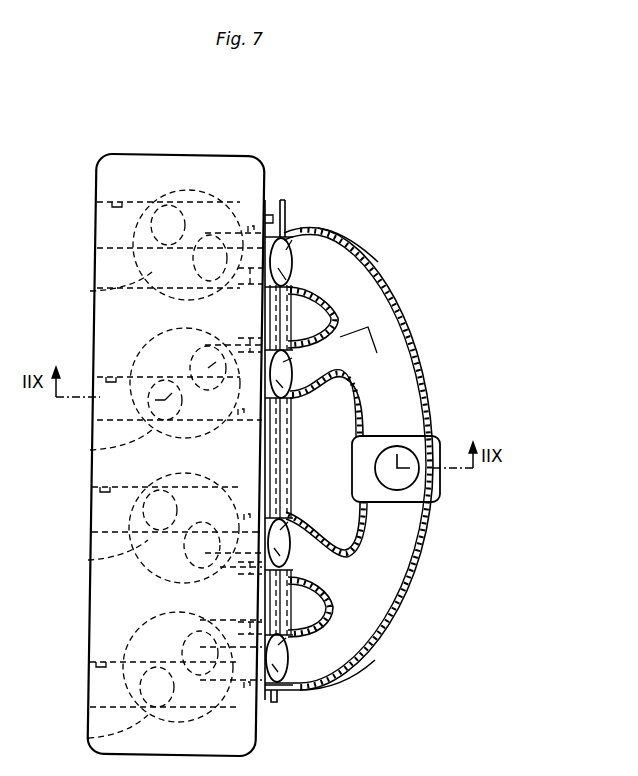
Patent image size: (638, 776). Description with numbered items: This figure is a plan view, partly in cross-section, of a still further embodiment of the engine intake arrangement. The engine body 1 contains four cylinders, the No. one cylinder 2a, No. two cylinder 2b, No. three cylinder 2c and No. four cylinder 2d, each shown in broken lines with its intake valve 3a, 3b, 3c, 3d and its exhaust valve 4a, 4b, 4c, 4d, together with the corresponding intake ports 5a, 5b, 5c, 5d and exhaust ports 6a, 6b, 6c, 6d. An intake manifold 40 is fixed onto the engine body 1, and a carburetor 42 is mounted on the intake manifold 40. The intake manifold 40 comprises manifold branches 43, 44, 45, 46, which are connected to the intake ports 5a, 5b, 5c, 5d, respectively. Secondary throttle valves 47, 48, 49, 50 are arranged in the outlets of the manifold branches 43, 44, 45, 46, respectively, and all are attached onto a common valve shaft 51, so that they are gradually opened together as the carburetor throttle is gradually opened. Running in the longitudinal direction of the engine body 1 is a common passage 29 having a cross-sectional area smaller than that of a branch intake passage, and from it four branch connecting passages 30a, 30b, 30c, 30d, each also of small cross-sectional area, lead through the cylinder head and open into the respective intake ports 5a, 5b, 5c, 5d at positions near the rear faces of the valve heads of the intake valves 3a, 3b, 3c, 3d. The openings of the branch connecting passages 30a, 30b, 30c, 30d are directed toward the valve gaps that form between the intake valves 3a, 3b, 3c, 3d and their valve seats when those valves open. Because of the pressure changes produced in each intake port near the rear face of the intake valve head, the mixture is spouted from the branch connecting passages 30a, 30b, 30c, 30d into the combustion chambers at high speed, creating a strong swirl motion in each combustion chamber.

The engine body 1 is at (273, 170).
The No. 1 cylinder 2a is at (92, 291).
The No. 2 cylinder 2b is at (92, 451).
The No. 3 cylinder 2c is at (90, 560).
The No. 4 cylinder 2d is at (90, 738).
The intake valve 3a is at (214, 236).
The intake valve 3b is at (208, 350).
The intake valve 3c is at (210, 522).
The intake valve 3d is at (200, 632).
The exhaust valve 4a is at (171, 206).
The exhaust valve 4b is at (165, 380).
The exhaust valve 4c is at (162, 490).
The exhaust valve 4d is at (157, 666).
The intake port 5a is at (250, 230).
The intake port 5b is at (240, 416).
The intake port 5c is at (247, 515).
The intake port 5d is at (245, 692).
The exhaust port 6a is at (118, 202).
The exhaust port 6b is at (112, 377).
The exhaust port 6c is at (119, 480).
The exhaust port 6d is at (101, 662).
The common passage 29 is at (278, 458).
The branch connecting passage 30a is at (247, 286).
The branch connecting passage 30b is at (247, 346).
The branch connecting passage 30c is at (248, 576).
The branch connecting passage 30d is at (250, 630).
The intake manifold 40 is at (398, 294).
The carburetor 42 is at (440, 445).
The manifold branch 43 is at (322, 252).
The manifold branch 44 is at (316, 390).
The manifold branch 45 is at (312, 534).
The manifold branch 46 is at (326, 690).
The secondary throttle valve 47 is at (290, 252).
The secondary throttle valve 48 is at (284, 388).
The secondary throttle valve 49 is at (286, 532).
The secondary throttle valve 50 is at (290, 700).
The common valve shaft 51 is at (280, 480).